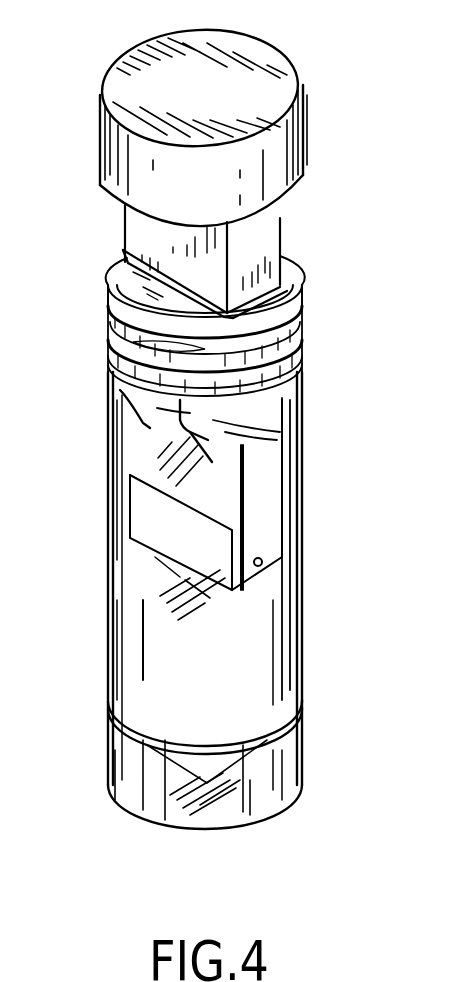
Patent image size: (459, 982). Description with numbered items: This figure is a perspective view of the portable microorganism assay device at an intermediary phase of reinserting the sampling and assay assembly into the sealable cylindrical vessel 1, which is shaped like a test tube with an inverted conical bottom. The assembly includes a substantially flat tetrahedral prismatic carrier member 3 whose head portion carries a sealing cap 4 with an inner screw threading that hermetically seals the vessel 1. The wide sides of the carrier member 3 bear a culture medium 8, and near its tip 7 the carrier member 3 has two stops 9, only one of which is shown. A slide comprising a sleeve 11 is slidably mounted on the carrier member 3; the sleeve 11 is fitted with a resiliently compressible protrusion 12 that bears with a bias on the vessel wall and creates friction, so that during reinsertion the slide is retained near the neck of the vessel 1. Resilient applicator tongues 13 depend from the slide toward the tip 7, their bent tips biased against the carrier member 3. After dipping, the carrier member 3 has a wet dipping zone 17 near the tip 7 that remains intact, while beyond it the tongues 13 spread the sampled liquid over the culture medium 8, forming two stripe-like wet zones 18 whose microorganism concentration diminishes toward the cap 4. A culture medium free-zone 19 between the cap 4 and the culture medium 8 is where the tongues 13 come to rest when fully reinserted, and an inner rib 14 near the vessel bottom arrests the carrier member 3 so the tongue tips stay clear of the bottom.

The sealable cylindrical vessel 1 is at (108, 513).
The carrier member 3 is at (268, 460).
The sealing cap 4 is at (122, 153).
The tip 7 is at (163, 597).
The culture medium 8 is at (262, 438).
The stop 9 is at (285, 590).
The sleeve 11 is at (300, 283).
The resiliently compressible protrusion 12 is at (113, 310).
The resilient applicator tongue 13 is at (147, 420).
The inner rib 14 is at (260, 740).
The wet dipping zone 17 is at (272, 625).
The stripe-like wet zone 18 is at (143, 448).
The culture medium free-zone 19 is at (262, 215).